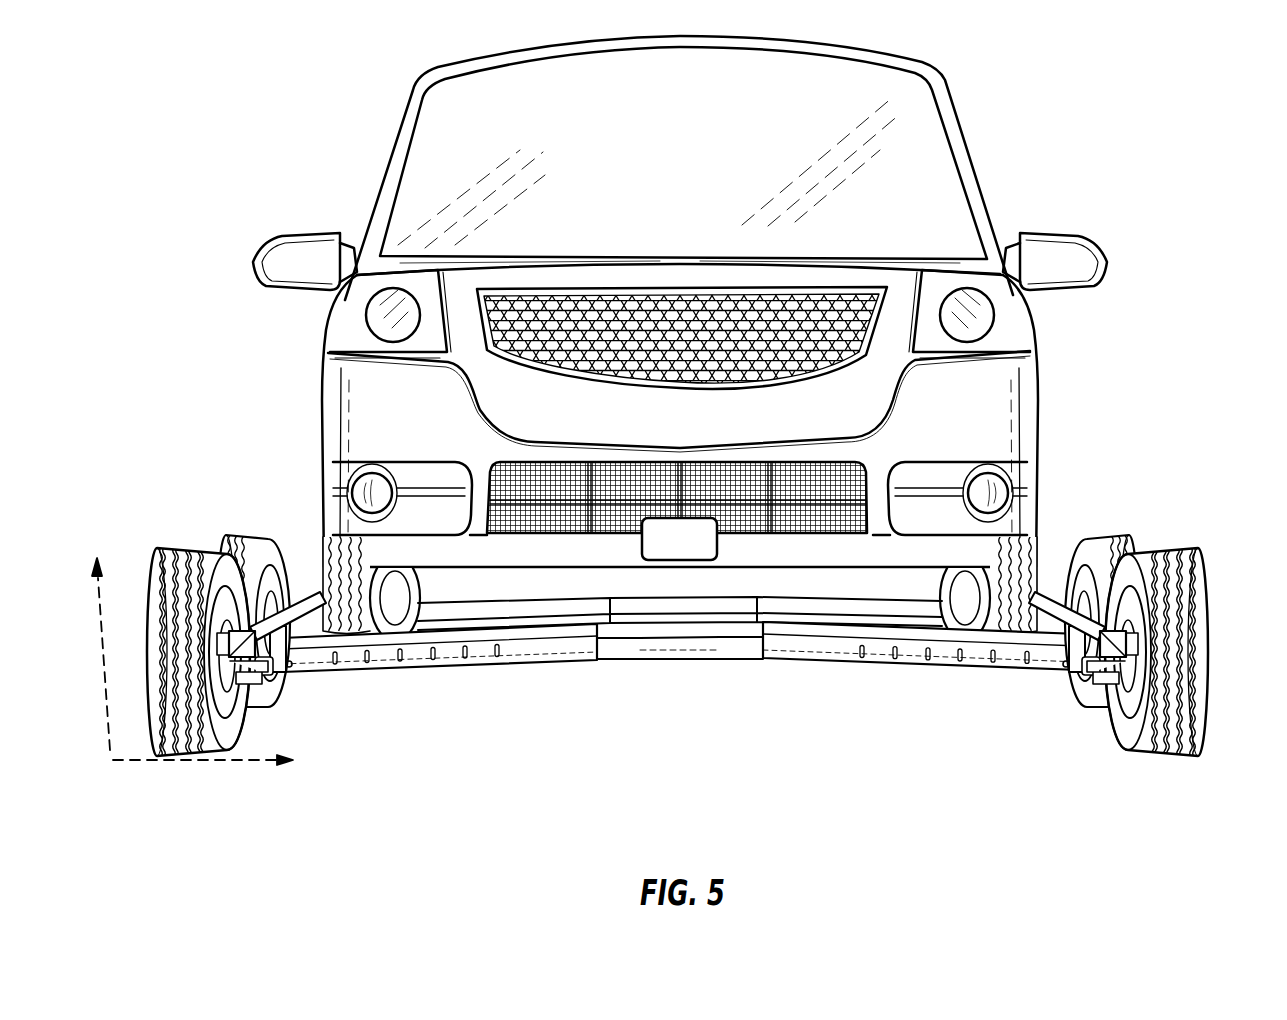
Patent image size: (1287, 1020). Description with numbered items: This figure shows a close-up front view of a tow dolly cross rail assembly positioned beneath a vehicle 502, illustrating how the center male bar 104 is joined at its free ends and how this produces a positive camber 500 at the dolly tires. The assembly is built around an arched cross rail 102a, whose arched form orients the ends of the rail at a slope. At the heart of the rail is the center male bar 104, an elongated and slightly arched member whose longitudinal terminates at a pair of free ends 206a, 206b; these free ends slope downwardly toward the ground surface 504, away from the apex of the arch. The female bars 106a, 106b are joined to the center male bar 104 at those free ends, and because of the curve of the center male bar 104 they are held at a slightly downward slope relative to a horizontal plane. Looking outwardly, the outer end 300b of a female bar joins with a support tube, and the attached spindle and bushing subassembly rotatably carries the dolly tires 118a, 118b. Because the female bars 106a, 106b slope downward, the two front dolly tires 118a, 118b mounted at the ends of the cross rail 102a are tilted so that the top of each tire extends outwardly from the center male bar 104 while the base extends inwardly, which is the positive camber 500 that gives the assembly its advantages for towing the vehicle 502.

The positive camber 500 is at (142, 762).
The vehicle 502 is at (331, 88).
The ground surface 504 is at (1030, 751).
The cross rail 102a is at (657, 702).
The center male bar 104 is at (672, 650).
The female bar 106a is at (482, 658).
The female bar 106b is at (878, 663).
The dolly tire 118a is at (187, 546).
The dolly tire 118b is at (1173, 545).
The free end 206a is at (615, 657).
The free end 206b is at (747, 653).
The outer end 300b is at (306, 667).